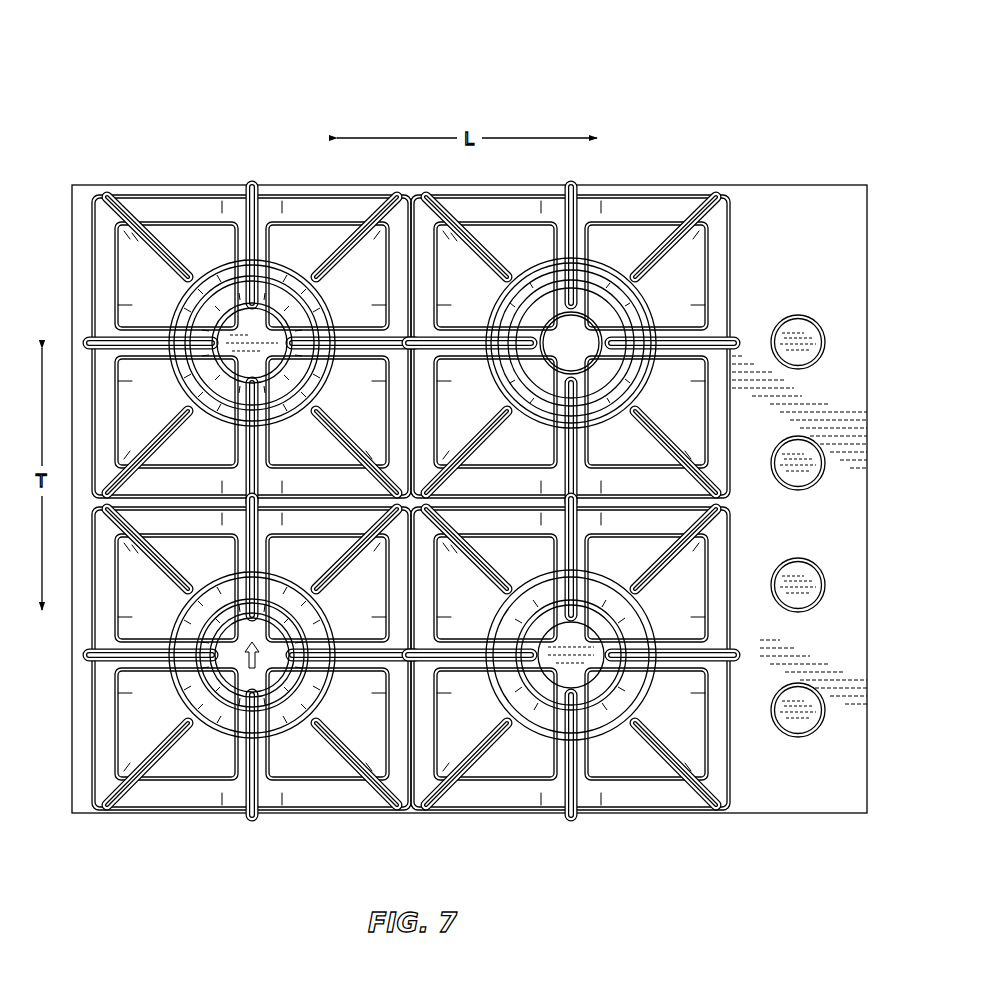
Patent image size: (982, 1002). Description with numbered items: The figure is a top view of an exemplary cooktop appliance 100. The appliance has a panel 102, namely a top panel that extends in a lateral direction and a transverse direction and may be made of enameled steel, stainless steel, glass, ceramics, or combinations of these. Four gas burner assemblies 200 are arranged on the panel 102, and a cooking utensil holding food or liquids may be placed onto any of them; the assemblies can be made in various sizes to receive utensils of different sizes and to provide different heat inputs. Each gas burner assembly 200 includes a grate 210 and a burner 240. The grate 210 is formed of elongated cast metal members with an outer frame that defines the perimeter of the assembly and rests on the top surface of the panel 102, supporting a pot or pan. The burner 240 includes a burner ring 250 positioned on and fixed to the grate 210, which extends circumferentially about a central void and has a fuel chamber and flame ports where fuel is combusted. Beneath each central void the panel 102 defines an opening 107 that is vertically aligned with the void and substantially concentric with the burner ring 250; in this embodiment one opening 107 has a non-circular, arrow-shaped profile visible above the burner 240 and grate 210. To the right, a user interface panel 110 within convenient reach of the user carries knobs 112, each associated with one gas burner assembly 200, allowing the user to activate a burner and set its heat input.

The cooktop appliance 100 is at (707, 103).
The panel 102 is at (619, 749).
The opening 107 is at (553, 318).
The user interface panel 110 is at (777, 784).
The knobs 112 is at (794, 316).
The gas burner assembly 200 is at (104, 206).
The grate 210 is at (484, 786).
The burner 240 is at (217, 714).
The burner ring 250 is at (289, 626).